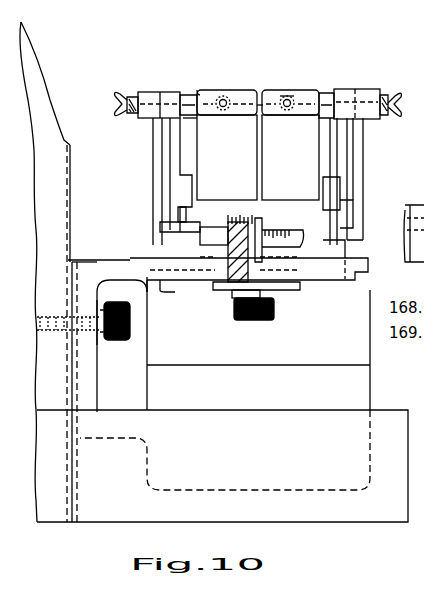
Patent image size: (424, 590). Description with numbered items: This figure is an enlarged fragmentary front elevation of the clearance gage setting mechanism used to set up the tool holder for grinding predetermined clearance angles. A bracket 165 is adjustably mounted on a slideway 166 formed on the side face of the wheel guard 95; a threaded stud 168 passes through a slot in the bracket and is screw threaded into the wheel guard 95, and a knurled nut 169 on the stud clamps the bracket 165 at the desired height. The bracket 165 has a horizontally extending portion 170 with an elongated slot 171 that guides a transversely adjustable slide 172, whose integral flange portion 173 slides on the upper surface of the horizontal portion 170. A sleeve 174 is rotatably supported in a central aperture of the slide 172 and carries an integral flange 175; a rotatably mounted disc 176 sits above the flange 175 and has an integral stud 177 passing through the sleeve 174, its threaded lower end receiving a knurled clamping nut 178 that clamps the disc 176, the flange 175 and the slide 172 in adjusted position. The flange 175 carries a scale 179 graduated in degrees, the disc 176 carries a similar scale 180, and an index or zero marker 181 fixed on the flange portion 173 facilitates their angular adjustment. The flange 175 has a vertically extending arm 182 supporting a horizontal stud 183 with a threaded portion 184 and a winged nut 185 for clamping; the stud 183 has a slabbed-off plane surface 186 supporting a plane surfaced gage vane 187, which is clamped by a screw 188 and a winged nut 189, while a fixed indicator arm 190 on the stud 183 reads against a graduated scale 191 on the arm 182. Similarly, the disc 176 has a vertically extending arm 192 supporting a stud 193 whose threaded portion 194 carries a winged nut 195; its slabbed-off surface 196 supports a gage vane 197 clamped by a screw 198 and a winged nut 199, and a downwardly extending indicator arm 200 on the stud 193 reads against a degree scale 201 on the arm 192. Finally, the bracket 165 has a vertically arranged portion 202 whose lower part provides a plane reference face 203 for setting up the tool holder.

The wheel guard 95 is at (42, 78).
The bracket 165 is at (80, 258).
The slideway 166 is at (73, 214).
The threaded stud 168 is at (92, 340).
The knurled nut 169 is at (130, 345).
The horizontally extending portion 170 is at (142, 270).
The elongated slot 171 is at (175, 280).
The slide 172 is at (212, 285).
The flange portion 173 is at (193, 252).
The sleeve 174 is at (225, 288).
The integral flange 175 is at (407, 230).
The disc 176 is at (176, 213).
The stud 177 is at (228, 238).
The knurled clamping nut 178 is at (278, 322).
The scale 179 is at (304, 236).
The scale 180 is at (220, 222).
The index or zero marker 181 is at (266, 212).
The vertically extending arm 182 is at (342, 168).
The stud 183 is at (347, 92).
The threaded portion 184 is at (384, 94).
The winged nut 185 is at (402, 96).
The slabbed-off plane surface 186 is at (328, 96).
The gage vane 187 is at (272, 125).
The screw 188 is at (290, 96).
The winged nut 189 is at (276, 96).
The indicator arm 190 is at (363, 182).
The graduated scale 191 is at (357, 223).
The vertically extending arm 192 is at (170, 152).
The stud 193 is at (165, 92).
The threaded portion 194 is at (134, 95).
The winged nut 195 is at (120, 97).
The slabbed-off plane surface 196 is at (188, 96).
The gage vane 197 is at (198, 93).
The screw 198 is at (224, 96).
The winged nut 199 is at (213, 92).
The indicator arm 200 is at (153, 168).
The graduated scale 201 is at (160, 226).
The vertically arranged portion 202 is at (360, 350).
The plane reference face 203 is at (353, 393).